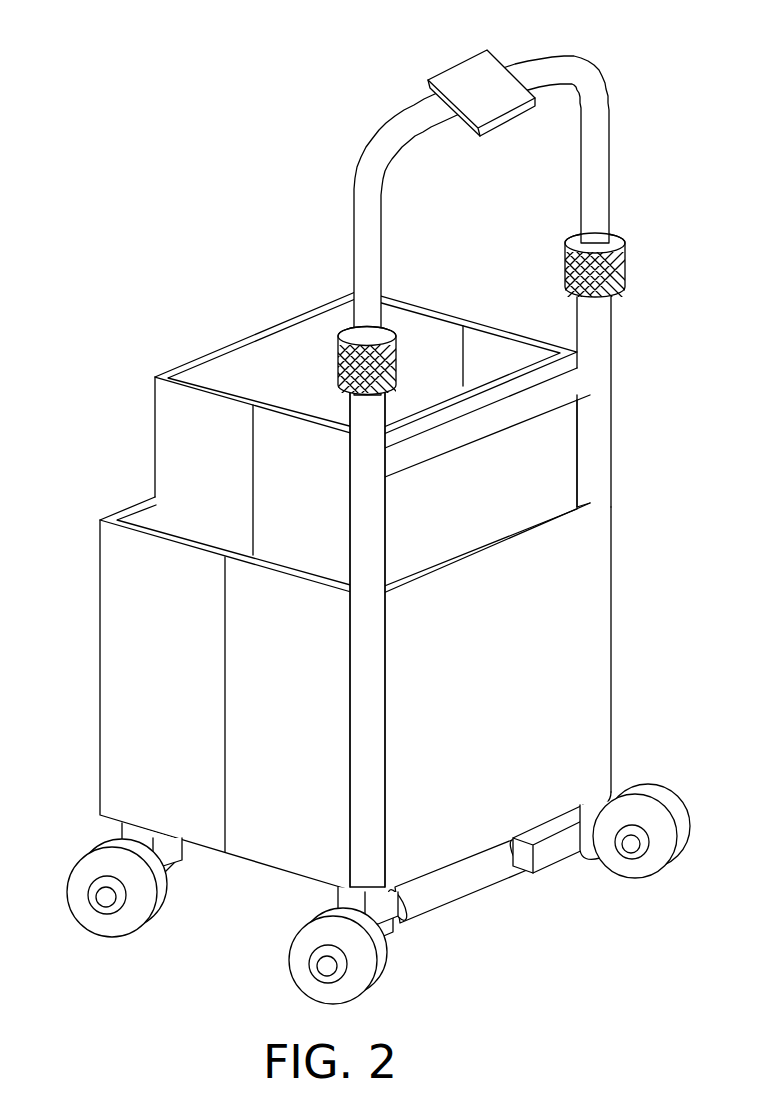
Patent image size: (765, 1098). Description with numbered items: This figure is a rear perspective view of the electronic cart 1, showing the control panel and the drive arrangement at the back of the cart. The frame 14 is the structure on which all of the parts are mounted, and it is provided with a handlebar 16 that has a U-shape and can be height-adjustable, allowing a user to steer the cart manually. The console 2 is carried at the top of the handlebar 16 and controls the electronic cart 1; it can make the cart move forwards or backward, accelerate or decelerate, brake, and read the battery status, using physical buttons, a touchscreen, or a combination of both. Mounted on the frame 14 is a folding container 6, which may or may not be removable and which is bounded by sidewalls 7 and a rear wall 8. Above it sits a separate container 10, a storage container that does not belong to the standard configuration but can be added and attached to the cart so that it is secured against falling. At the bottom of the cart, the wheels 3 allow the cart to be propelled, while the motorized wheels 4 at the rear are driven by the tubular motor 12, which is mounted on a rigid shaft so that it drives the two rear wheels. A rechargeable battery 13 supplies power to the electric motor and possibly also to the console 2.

The electronic cart 1 is at (208, 74).
The console 2 is at (460, 60).
The wheels 3 is at (85, 862).
The motorized wheels 4 is at (674, 810).
The folding container 6 is at (66, 667).
The sidewalls 7 is at (125, 775).
The rear wall 8 is at (558, 690).
The separate container 10 is at (113, 440).
The tubular motor 12 is at (447, 893).
The battery 13 is at (555, 848).
The frame 14 is at (597, 441).
The handlebar 16 is at (368, 146).